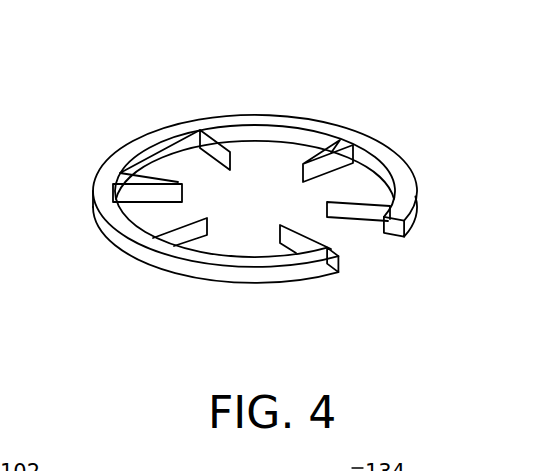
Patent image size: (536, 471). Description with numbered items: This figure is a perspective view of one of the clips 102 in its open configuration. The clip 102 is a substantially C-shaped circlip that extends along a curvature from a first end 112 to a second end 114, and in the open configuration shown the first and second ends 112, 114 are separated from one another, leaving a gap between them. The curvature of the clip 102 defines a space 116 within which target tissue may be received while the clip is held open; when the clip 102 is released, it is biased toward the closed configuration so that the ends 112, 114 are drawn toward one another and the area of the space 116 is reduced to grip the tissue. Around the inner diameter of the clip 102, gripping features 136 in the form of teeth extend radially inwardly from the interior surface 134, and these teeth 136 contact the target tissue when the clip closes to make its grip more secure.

The clip 102 is at (410, 131).
The first end 112 is at (338, 274).
The second end 114 is at (406, 240).
The space 116 is at (232, 212).
The interior surface 134 is at (186, 126).
The gripping features 136 is at (330, 148).